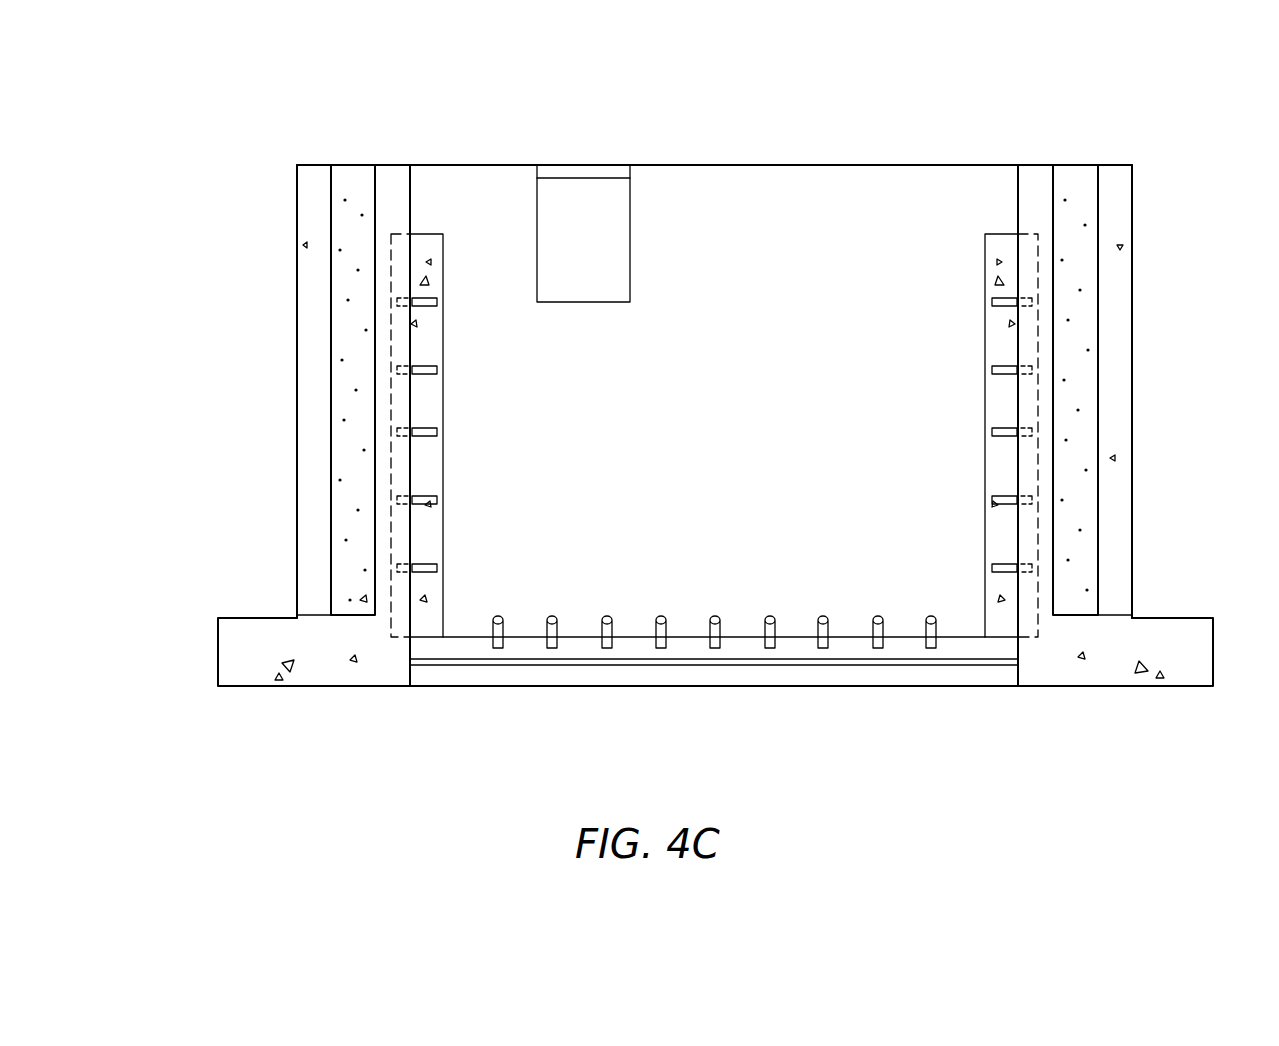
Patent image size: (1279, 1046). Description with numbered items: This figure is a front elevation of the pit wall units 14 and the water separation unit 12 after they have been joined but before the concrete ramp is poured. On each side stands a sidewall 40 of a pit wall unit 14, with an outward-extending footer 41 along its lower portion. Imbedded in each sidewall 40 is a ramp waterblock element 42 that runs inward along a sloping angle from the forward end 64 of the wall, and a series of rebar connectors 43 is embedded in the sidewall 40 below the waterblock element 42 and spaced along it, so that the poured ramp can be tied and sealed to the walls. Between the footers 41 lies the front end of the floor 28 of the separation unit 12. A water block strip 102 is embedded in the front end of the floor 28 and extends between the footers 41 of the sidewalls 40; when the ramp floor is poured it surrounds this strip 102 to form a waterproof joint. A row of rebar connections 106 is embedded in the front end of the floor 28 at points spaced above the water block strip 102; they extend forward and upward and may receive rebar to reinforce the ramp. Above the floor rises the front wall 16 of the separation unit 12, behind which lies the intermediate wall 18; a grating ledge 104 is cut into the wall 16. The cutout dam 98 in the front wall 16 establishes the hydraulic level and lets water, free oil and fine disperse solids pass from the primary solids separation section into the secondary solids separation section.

The water separation unit 12 is at (762, 126).
The pit wall units 14 is at (266, 178).
The front wall 16 is at (709, 428).
The intermediate wall 18 is at (594, 192).
The floor 28 is at (898, 680).
The sidewall 40 is at (297, 415).
The footer 41 is at (240, 625).
The ramp waterblock element 42 is at (443, 255).
The rebar connectors 43 is at (437, 370).
The forward end 64 is at (310, 285).
The cutout dam 98 is at (600, 300).
The water block strips 102 is at (632, 668).
The grating ledges 104 is at (613, 168).
The rebar connections 106 is at (715, 616).